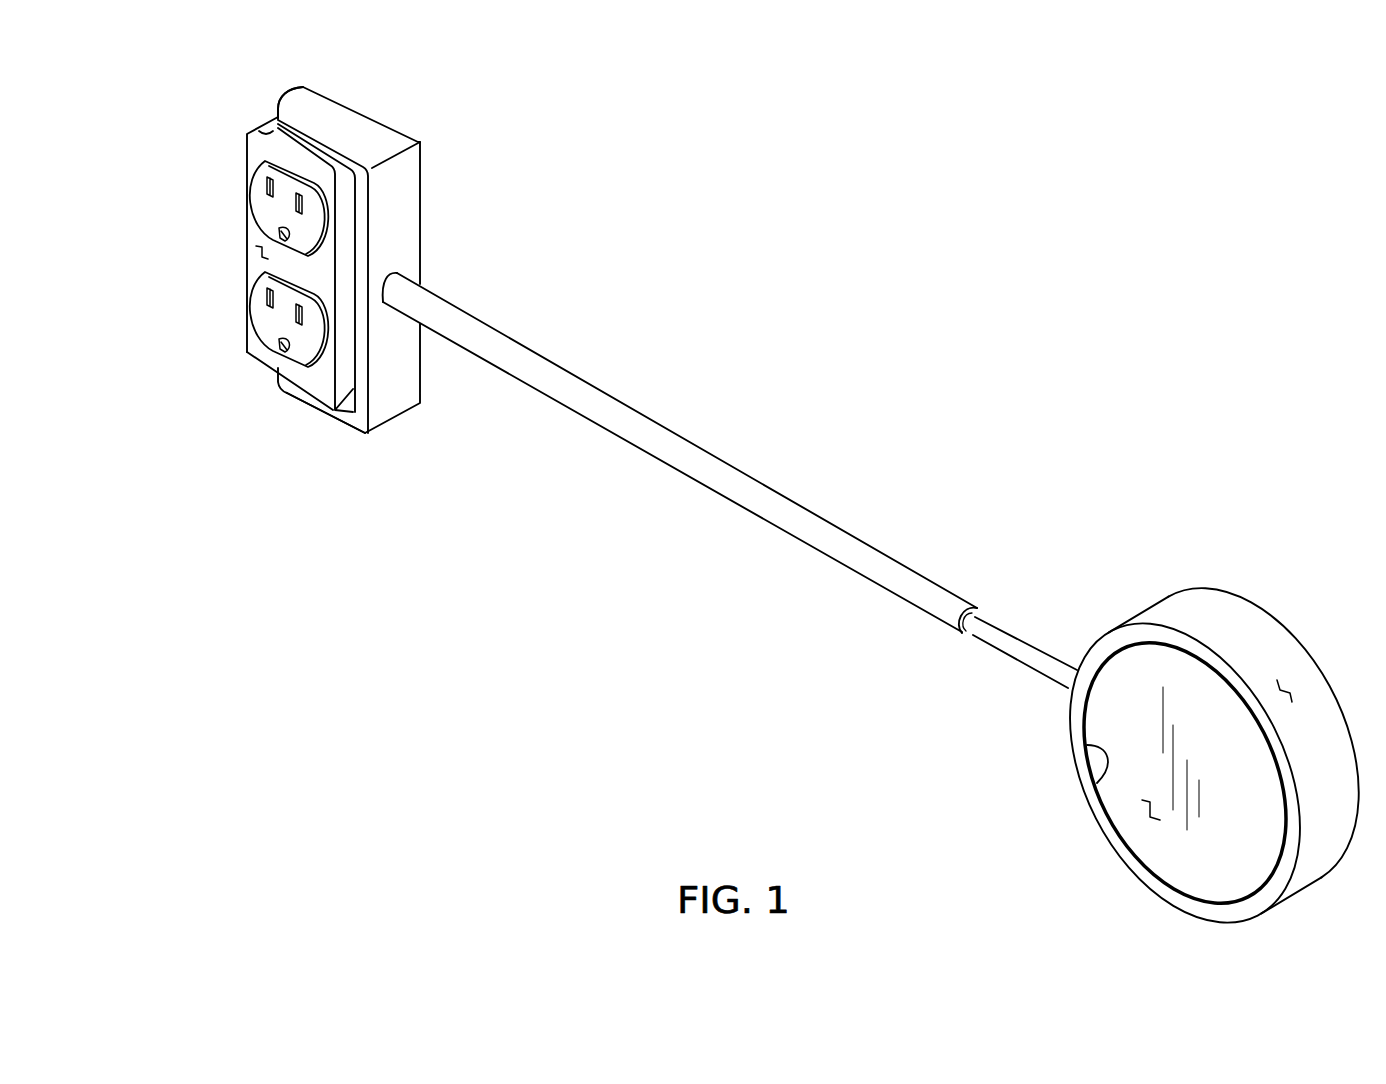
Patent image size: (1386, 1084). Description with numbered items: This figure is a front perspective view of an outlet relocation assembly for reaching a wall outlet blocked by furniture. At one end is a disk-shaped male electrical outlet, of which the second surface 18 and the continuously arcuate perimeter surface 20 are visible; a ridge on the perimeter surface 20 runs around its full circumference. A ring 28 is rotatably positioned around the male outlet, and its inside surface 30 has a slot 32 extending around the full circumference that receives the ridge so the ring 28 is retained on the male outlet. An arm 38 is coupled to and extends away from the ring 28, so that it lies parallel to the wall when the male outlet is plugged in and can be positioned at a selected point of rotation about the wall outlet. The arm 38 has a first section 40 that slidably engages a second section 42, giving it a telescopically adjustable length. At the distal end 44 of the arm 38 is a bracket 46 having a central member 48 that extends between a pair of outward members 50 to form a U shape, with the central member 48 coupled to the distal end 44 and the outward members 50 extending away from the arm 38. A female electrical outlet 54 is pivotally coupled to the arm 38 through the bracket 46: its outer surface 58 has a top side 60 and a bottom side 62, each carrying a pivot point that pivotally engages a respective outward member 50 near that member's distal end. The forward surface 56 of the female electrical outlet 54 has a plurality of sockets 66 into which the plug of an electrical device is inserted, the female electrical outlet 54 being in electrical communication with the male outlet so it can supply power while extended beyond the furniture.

The second surface 18 is at (1148, 815).
The perimeter surface 20 is at (1243, 905).
The ring 28 is at (1198, 622).
The inside surface 30 is at (1100, 770).
The slot 32 is at (1293, 688).
The arm 38 is at (762, 482).
The first section 40 is at (1018, 605).
The second section 42 is at (627, 372).
The distal end 44 is at (384, 272).
The bracket 46 is at (420, 142).
The central member 48 is at (393, 203).
The outward members 50 is at (316, 102).
The female electrical outlet 54 is at (188, 320).
The forward surface 56 is at (259, 249).
The outer surface 58 is at (268, 120).
The top side 60 is at (318, 165).
The bottom side 62 is at (277, 366).
The sockets 66 is at (282, 234).